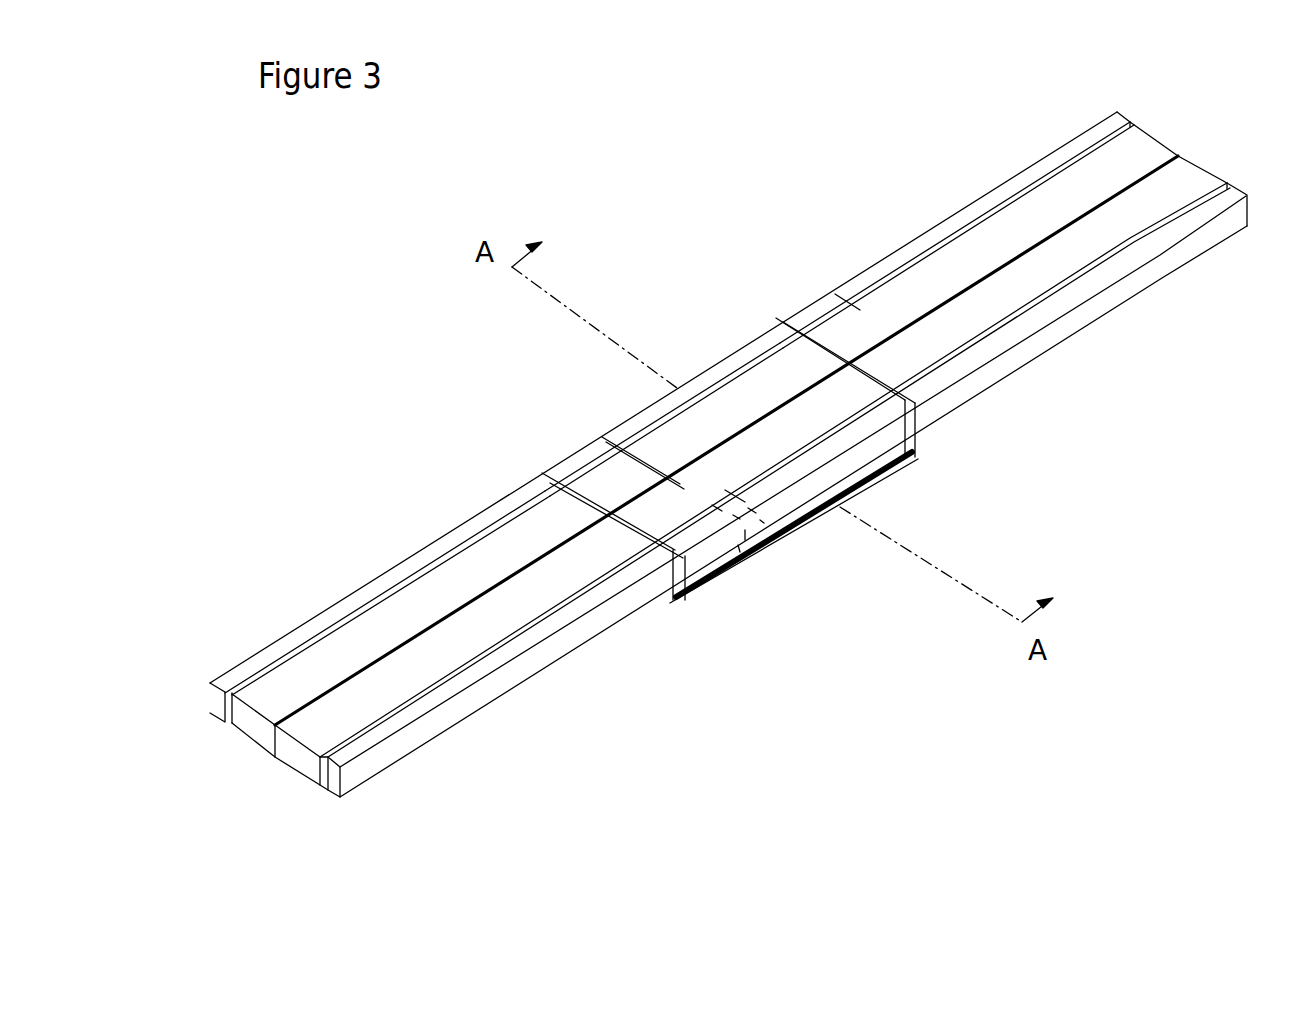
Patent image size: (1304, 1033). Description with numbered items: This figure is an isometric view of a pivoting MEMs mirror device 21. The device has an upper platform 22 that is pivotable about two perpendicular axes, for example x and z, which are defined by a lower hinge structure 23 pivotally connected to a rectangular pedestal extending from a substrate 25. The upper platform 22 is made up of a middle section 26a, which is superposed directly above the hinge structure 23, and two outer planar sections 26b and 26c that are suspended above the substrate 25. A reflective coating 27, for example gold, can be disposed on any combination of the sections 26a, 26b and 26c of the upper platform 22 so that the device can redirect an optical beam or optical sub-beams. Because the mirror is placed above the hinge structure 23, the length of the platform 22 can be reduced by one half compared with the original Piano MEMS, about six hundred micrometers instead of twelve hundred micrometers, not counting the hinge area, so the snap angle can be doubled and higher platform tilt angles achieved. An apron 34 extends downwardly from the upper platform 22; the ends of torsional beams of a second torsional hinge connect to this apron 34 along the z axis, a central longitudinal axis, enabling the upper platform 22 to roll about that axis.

The MEMs mirror device 21 is at (597, 224).
The upper platform 22 is at (878, 310).
The lower hinge structure 23 is at (767, 546).
The substrate 25 is at (1100, 416).
The middle section 26a is at (733, 400).
The outer planar section 26b is at (345, 650).
The outer planar section 26c is at (1013, 217).
The reflective coating 27 is at (501, 636).
The apron 34 is at (898, 458).